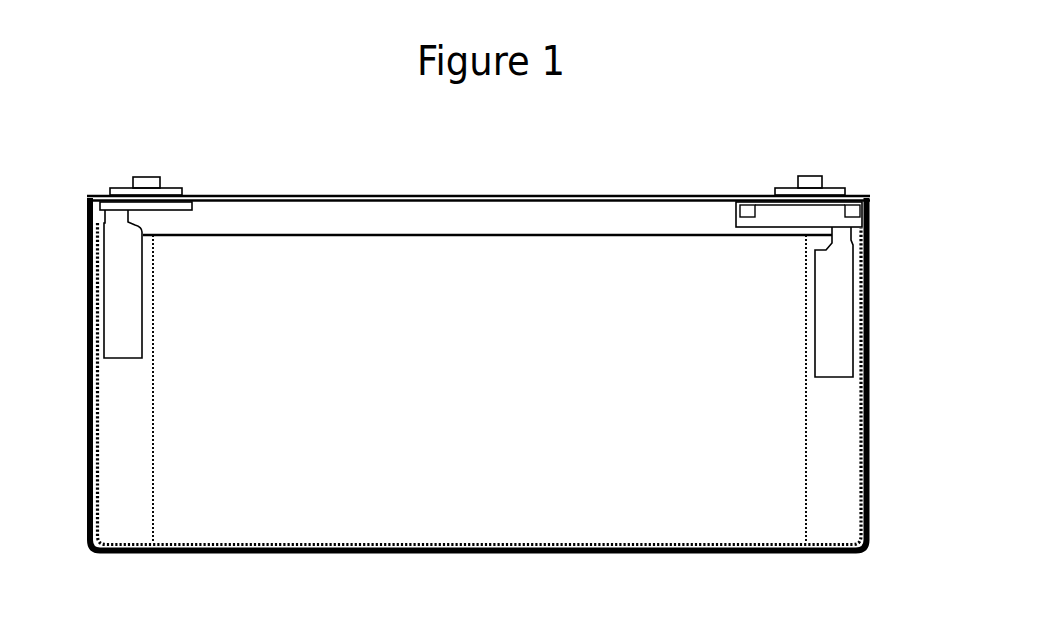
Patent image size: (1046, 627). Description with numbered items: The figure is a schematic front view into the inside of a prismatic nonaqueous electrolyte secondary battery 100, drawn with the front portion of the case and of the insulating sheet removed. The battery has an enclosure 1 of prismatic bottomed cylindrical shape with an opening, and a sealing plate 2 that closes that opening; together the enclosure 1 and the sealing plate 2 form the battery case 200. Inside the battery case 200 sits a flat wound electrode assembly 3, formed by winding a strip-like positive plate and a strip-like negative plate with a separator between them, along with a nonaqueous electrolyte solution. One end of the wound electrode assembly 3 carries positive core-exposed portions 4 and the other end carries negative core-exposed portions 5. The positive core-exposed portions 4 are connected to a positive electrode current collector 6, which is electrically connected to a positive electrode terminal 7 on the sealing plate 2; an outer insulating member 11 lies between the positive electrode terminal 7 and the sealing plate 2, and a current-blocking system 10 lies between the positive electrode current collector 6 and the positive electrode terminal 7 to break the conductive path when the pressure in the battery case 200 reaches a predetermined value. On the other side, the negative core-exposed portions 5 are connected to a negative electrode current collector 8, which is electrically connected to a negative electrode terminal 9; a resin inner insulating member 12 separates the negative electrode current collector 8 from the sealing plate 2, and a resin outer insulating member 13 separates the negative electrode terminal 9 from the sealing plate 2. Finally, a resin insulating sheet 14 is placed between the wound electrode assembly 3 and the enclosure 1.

The prismatic nonaqueous electrolyte secondary battery 100 is at (347, 106).
The battery case 200 is at (873, 400).
The enclosure 1 is at (870, 443).
The sealing plate 2 is at (341, 195).
The wound electrode assembly 3 is at (489, 530).
The positive core-exposed portions 4 is at (833, 528).
The negative core-exposed portions 5 is at (121, 528).
The positive electrode current collector 6 is at (840, 285).
The positive electrode terminal 7 is at (809, 175).
The negative electrode current collector 8 is at (122, 303).
The negative electrode terminal 9 is at (143, 176).
The current-blocking system 10 is at (825, 215).
The outer insulating member 11 is at (782, 187).
The inner insulating member 12 is at (190, 205).
The outer insulating member 13 is at (181, 188).
The insulating sheet 14 is at (90, 493).